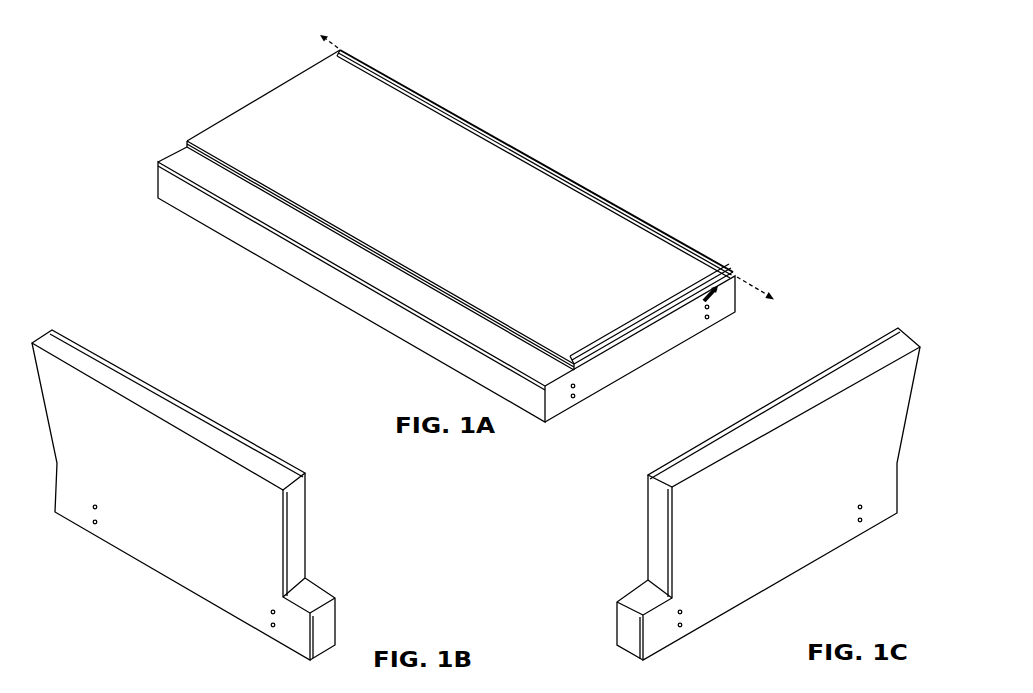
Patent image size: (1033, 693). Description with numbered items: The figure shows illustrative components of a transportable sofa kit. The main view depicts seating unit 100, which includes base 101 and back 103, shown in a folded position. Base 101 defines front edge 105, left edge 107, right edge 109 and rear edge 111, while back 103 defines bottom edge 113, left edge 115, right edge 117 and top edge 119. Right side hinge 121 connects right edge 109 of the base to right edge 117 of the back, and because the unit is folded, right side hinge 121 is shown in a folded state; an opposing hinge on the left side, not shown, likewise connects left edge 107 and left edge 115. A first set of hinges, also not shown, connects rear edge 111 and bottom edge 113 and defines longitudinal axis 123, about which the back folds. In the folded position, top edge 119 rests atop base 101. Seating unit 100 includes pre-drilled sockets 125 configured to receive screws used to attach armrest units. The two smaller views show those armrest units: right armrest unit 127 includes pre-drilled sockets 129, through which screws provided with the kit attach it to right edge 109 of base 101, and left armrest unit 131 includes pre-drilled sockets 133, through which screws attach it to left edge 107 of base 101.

In FIG. 1A, the seating unit 100 is at (241, 92).
In FIG. 1A, the base 101 is at (181, 167).
In FIG. 1A, the back 103 is at (388, 83).
In FIG. 1A, the front edge 105 is at (238, 228).
In FIG. 1A, the left edge 107 is at (270, 82).
In FIG. 1A, the right edge 109 is at (642, 350).
In FIG. 1A, the rear edge 111 is at (582, 186).
In FIG. 1A, the bottom edge 113 is at (456, 114).
In FIG. 1A, the left edge 115 is at (313, 72).
In FIG. 1A, the right edge 117 is at (660, 309).
In FIG. 1A, the top edge 119 is at (352, 240).
In FIG. 1A, the right side hinge 121 is at (716, 296).
In FIG. 1A, the longitudinal axis 123 is at (755, 288).
In FIG. 1A, the pre-drilled sockets 125 is at (712, 319).
In FIG. 1B, the right armrest unit 127 is at (187, 402).
In FIG. 1B, the pre-drilled sockets 129 is at (92, 515).
In FIG. 1C, the left armrest unit 131 is at (838, 378).
In FIG. 1C, the pre-drilled sockets 133 is at (852, 521).